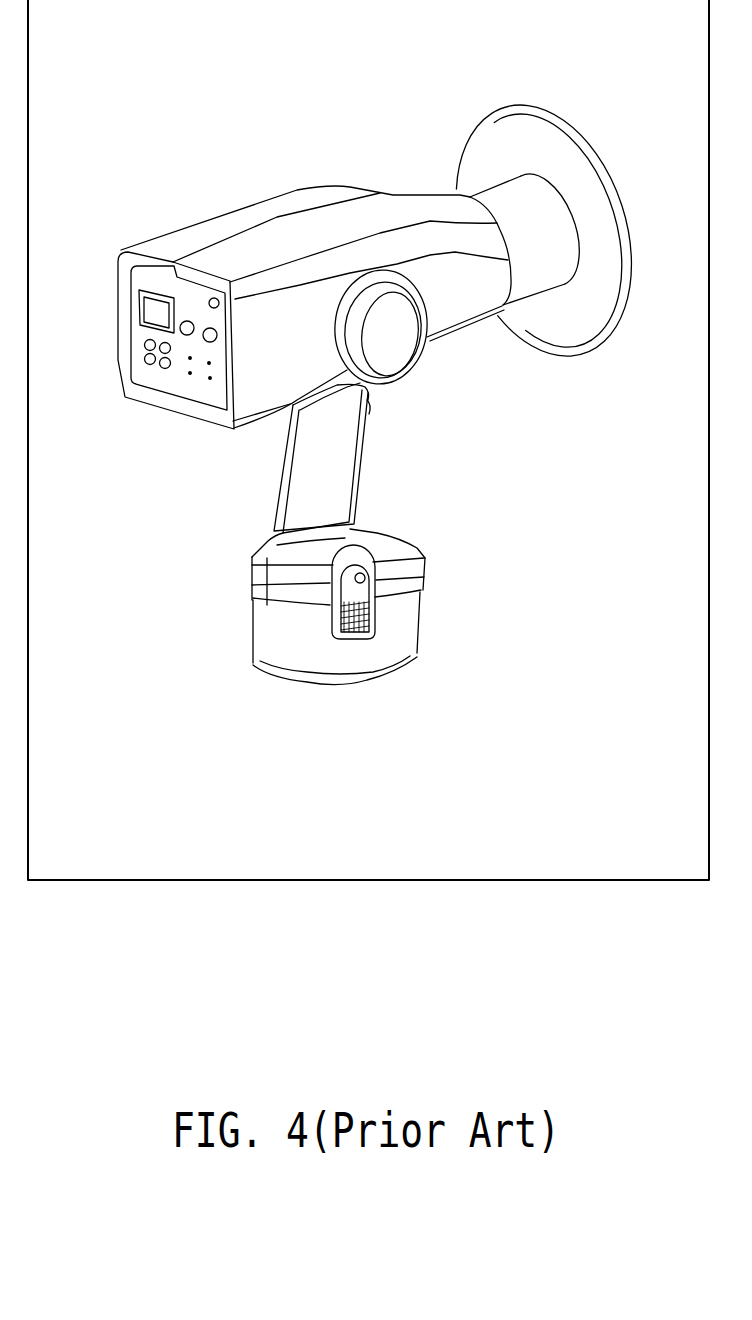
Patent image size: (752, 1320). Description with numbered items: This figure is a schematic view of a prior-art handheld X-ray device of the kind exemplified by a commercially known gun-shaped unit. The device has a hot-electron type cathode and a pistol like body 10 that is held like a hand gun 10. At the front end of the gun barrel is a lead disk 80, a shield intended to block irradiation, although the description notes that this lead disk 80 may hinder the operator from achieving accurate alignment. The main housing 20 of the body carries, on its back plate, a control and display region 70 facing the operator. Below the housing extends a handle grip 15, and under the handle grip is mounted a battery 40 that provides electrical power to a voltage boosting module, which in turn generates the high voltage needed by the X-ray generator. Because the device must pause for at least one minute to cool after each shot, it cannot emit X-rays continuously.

The pistol like body 10 is at (211, 155).
The main body housing 20 is at (265, 345).
The control panel 70 is at (116, 409).
The lead disk 80 is at (560, 330).
The handle 15 is at (302, 488).
The battery 40 is at (277, 651).